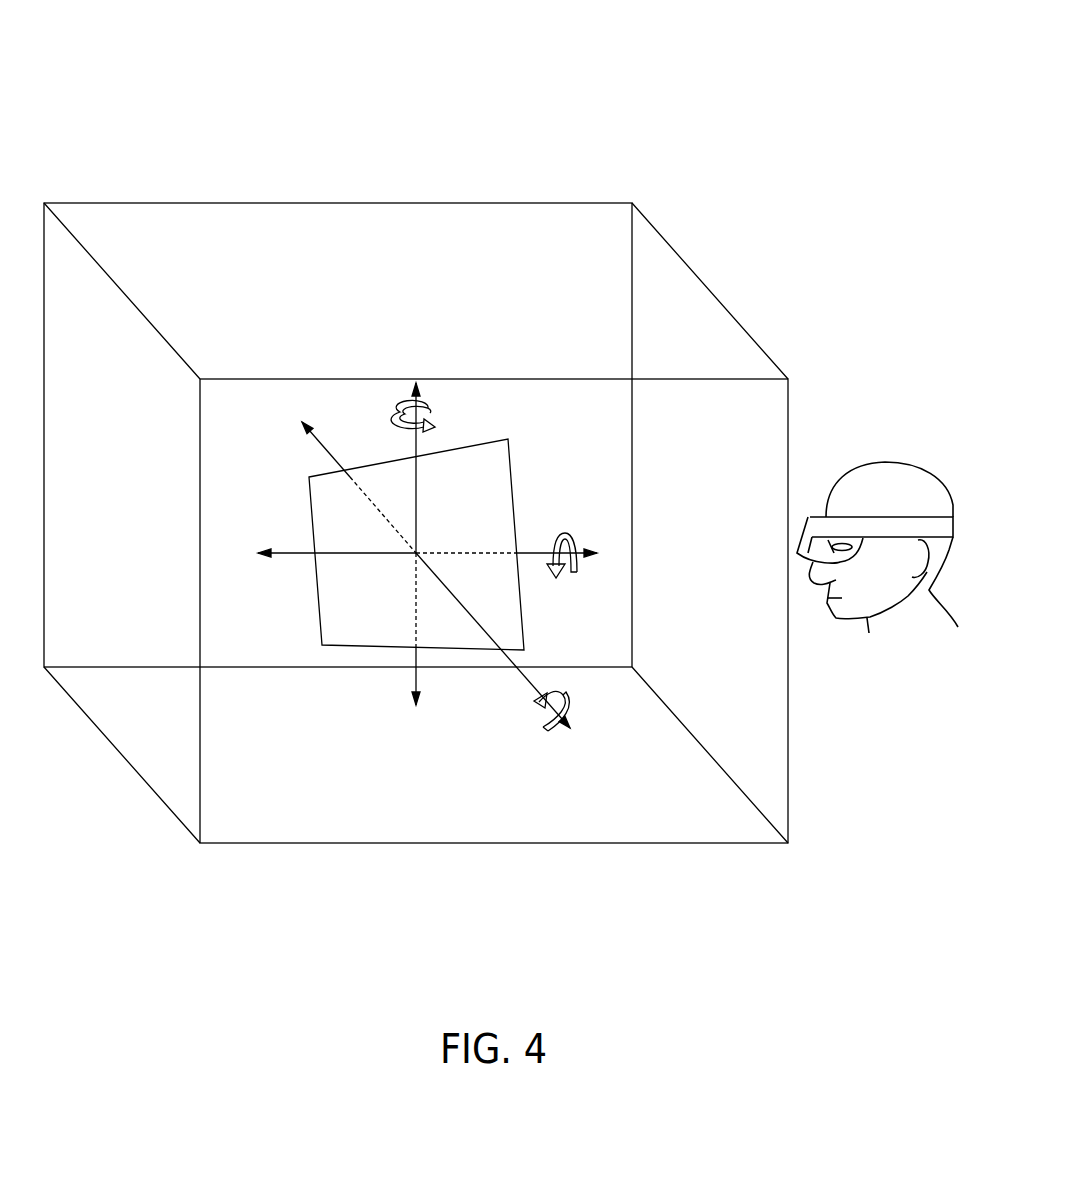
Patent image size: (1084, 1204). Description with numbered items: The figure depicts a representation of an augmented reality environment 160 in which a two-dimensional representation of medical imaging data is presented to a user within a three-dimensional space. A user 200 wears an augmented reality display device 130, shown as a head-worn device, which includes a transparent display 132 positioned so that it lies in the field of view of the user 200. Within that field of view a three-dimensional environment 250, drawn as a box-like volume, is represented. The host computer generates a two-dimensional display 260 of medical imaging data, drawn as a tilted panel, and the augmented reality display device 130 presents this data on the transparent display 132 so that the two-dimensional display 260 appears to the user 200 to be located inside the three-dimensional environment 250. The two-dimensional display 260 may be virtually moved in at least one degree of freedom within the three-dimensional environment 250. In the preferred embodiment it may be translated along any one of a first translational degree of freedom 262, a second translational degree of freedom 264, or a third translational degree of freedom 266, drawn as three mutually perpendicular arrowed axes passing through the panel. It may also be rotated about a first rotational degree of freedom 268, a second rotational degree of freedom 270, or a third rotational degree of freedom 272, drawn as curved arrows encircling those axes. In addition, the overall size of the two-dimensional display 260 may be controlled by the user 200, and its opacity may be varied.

The augmented reality environment 160 is at (545, 140).
The three-dimensional environment 250 is at (652, 275).
The user 200 is at (880, 487).
The augmented reality display device 130 is at (817, 513).
The transparent display 132 is at (808, 553).
The two-dimensional display 260 is at (493, 478).
The first translational degree of freedom 262 is at (463, 610).
The second translational degree of freedom 264 is at (368, 553).
The third translational degree of freedom 266 is at (415, 493).
The first rotational degree of freedom 268 is at (575, 699).
The second rotational degree of freedom 270 is at (570, 534).
The third rotational degree of freedom 272 is at (431, 409).